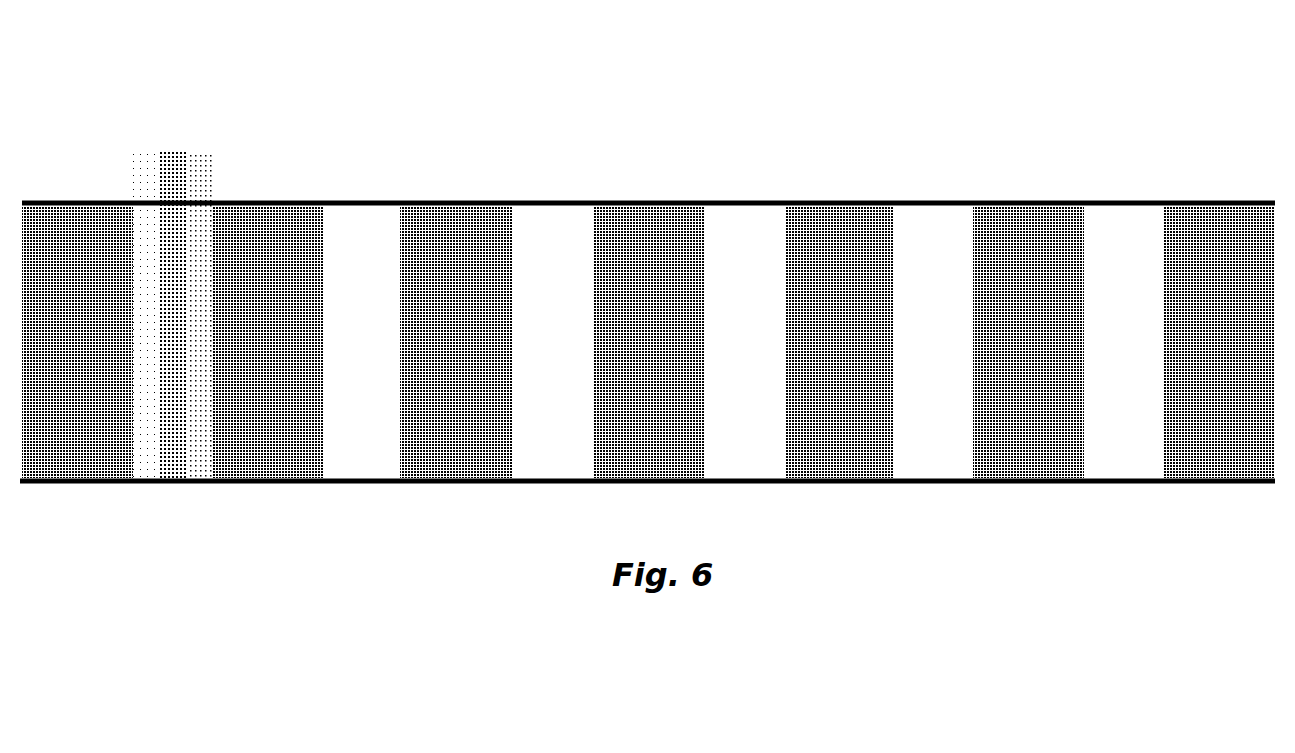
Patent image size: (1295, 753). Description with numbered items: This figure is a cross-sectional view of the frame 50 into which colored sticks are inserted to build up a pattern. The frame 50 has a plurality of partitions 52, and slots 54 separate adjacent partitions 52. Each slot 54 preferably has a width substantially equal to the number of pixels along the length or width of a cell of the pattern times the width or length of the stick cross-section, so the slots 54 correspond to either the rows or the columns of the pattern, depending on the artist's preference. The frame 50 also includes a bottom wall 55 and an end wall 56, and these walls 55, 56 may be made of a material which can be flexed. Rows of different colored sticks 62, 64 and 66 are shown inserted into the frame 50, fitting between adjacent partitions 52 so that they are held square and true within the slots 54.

The frame 50 is at (258, 522).
The partitions 52 is at (832, 450).
The slots 54 is at (1110, 423).
The bottom wall 55 is at (560, 481).
The end wall 56 is at (557, 203).
The colored stick 62 is at (145, 152).
The colored stick 64 is at (173, 152).
The colored stick 66 is at (200, 152).